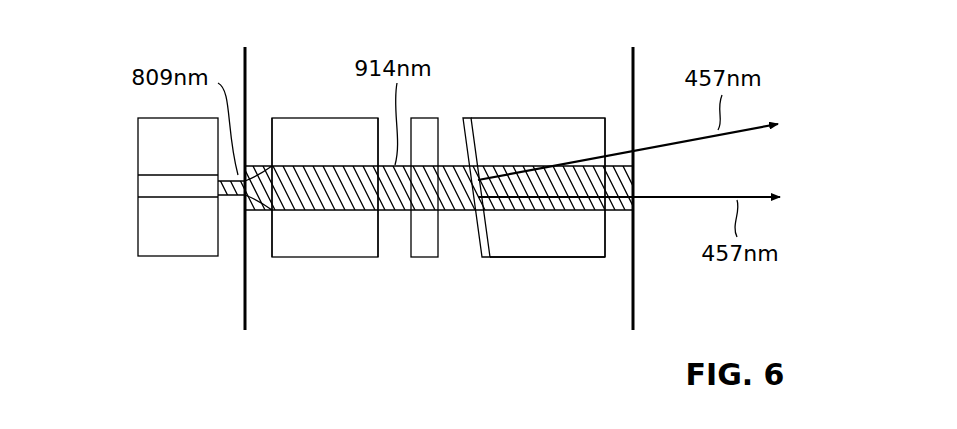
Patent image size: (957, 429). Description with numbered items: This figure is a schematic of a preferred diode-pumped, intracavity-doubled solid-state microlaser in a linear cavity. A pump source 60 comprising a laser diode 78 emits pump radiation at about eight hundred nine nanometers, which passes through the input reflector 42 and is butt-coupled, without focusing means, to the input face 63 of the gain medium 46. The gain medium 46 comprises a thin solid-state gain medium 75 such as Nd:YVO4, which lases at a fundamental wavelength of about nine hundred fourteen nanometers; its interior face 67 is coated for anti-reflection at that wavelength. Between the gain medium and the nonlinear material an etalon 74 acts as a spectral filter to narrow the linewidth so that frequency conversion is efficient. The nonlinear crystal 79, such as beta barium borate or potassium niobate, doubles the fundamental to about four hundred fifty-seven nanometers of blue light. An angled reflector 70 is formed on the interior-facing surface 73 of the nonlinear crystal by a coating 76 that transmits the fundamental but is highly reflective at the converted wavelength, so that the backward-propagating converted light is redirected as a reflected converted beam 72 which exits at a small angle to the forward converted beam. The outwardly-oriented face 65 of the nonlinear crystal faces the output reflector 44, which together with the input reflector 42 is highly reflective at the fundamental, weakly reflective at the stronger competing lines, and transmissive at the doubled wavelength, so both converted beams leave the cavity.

The pump source 60 is at (111, 116).
The laser diode 78 is at (138, 238).
The input reflector 42 is at (242, 303).
The output reflector 44 is at (635, 298).
The gain medium 46 is at (338, 258).
The solid-state gain medium 75 is at (307, 242).
The input face 63 is at (272, 240).
The interior face 67 is at (380, 245).
The etalon 74 is at (423, 258).
The interior-facing surface 73 is at (542, 196).
The coating 76 is at (473, 247).
The nonlinear crystal 79 is at (529, 242).
The reflected converted beam 72 is at (562, 258).
The outwardly-oriented face 65 is at (610, 248).
The angled reflector 70 is at (481, 287).